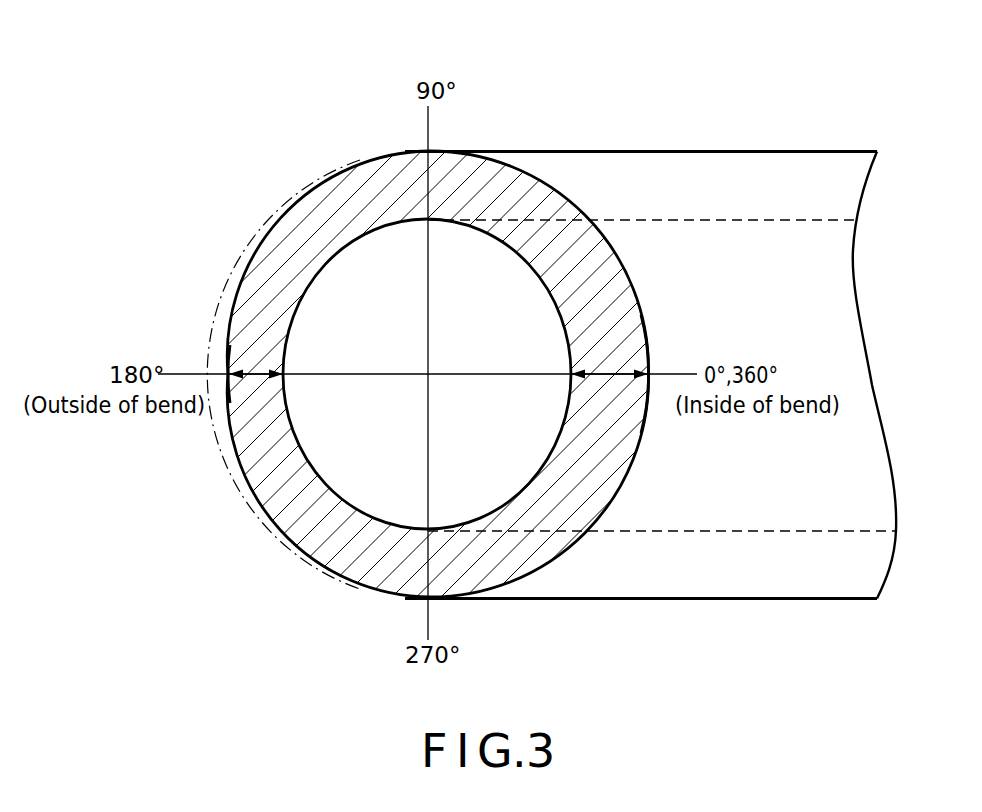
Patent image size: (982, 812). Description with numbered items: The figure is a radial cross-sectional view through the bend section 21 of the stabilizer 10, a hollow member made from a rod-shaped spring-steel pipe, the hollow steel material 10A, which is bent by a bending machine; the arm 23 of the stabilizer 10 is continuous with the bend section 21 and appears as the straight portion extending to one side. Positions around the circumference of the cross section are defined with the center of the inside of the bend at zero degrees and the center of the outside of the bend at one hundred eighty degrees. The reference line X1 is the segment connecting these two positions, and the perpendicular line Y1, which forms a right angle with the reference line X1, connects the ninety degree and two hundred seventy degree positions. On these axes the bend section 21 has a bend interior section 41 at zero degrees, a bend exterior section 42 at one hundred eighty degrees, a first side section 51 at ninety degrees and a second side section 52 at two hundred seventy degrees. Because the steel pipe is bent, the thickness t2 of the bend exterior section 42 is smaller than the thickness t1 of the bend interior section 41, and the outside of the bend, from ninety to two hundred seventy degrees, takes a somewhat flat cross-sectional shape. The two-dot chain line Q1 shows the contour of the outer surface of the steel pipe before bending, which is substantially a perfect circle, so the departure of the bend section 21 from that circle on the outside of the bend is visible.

The stabilizer 10 is at (638, 92).
The hollow steel material 10A is at (744, 150).
The bend section 21 is at (271, 228).
The arm 23 is at (814, 600).
The bend interior section 41 is at (651, 380).
The bend exterior section 42 is at (222, 395).
The first side section 51 is at (427, 149).
The second side section 52 is at (428, 600).
The two-dot chain line Q1 is at (225, 463).
The thickness of the bend interior section t1 is at (610, 371).
The thickness of the bend exterior section t2 is at (253, 371).
The reference line X1 is at (482, 373).
The perpendicular line Y1 is at (427, 308).